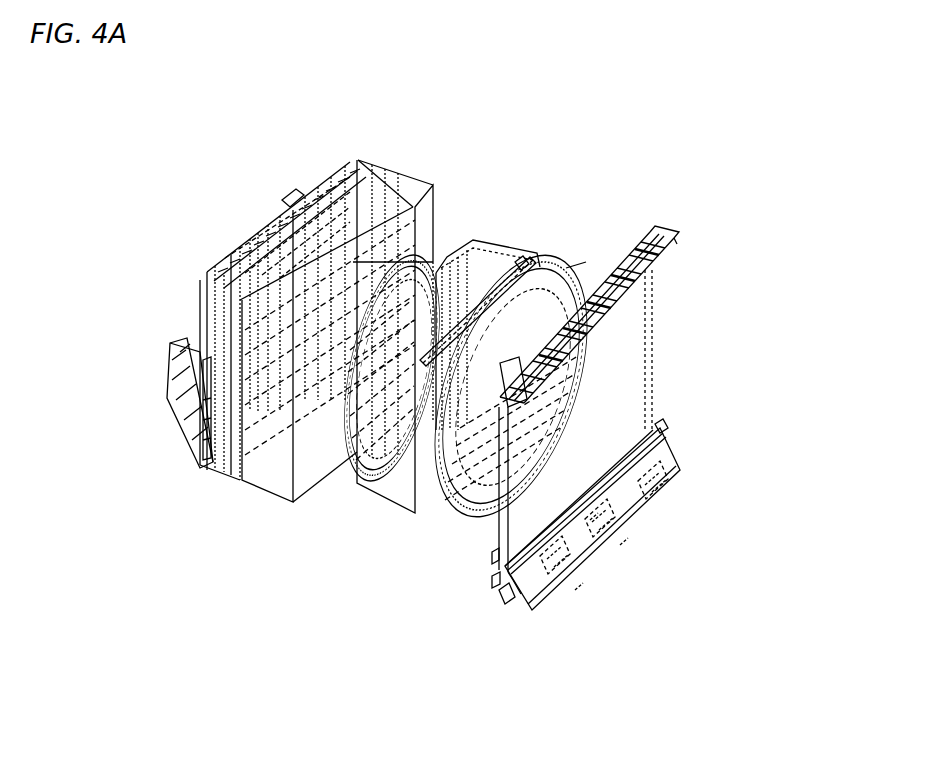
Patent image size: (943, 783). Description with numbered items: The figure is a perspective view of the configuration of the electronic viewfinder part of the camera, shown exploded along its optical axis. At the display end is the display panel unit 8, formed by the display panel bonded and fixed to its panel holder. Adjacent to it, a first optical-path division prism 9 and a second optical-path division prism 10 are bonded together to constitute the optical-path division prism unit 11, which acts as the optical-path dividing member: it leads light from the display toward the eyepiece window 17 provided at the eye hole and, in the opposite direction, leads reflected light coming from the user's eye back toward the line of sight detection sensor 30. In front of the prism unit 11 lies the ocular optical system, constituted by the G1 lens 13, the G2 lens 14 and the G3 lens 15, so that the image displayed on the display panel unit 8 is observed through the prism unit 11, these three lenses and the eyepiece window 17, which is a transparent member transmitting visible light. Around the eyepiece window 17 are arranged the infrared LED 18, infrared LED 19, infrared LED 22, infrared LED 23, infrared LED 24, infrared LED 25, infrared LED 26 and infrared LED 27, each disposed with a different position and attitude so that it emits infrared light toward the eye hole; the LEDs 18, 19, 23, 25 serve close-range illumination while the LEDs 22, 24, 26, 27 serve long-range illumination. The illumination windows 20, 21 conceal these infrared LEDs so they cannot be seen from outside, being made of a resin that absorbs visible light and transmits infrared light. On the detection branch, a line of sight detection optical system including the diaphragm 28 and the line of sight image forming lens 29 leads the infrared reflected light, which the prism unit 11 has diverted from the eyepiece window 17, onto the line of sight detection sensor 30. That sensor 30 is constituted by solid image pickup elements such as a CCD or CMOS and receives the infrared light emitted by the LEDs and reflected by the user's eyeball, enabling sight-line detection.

The display panel unit 8 is at (265, 255).
The first optical-path division prism 9 is at (340, 215).
The second optical-path division prism 10 is at (370, 175).
The optical-path division prism unit 11 is at (393, 52).
The G1 lens 13 is at (448, 240).
The G2 lens 14 is at (508, 242).
The G3 lens 15 is at (566, 268).
The eyepiece window 17 is at (625, 382).
The infrared LED 18 is at (615, 520).
The infrared LED 19 is at (627, 301).
The illumination window 20 is at (633, 490).
The illumination window 21 is at (677, 244).
The infrared LED 22 is at (646, 231).
The infrared LED 23 is at (493, 507).
The infrared LED 24 is at (373, 490).
The infrared LED 25 is at (563, 556).
The infrared LED 26 is at (510, 592).
The infrared LED 27 is at (665, 430).
The diaphragm 28 is at (200, 290).
The line of sight image forming lens 29 is at (170, 387).
The line of sight detection sensor 30 is at (187, 440).